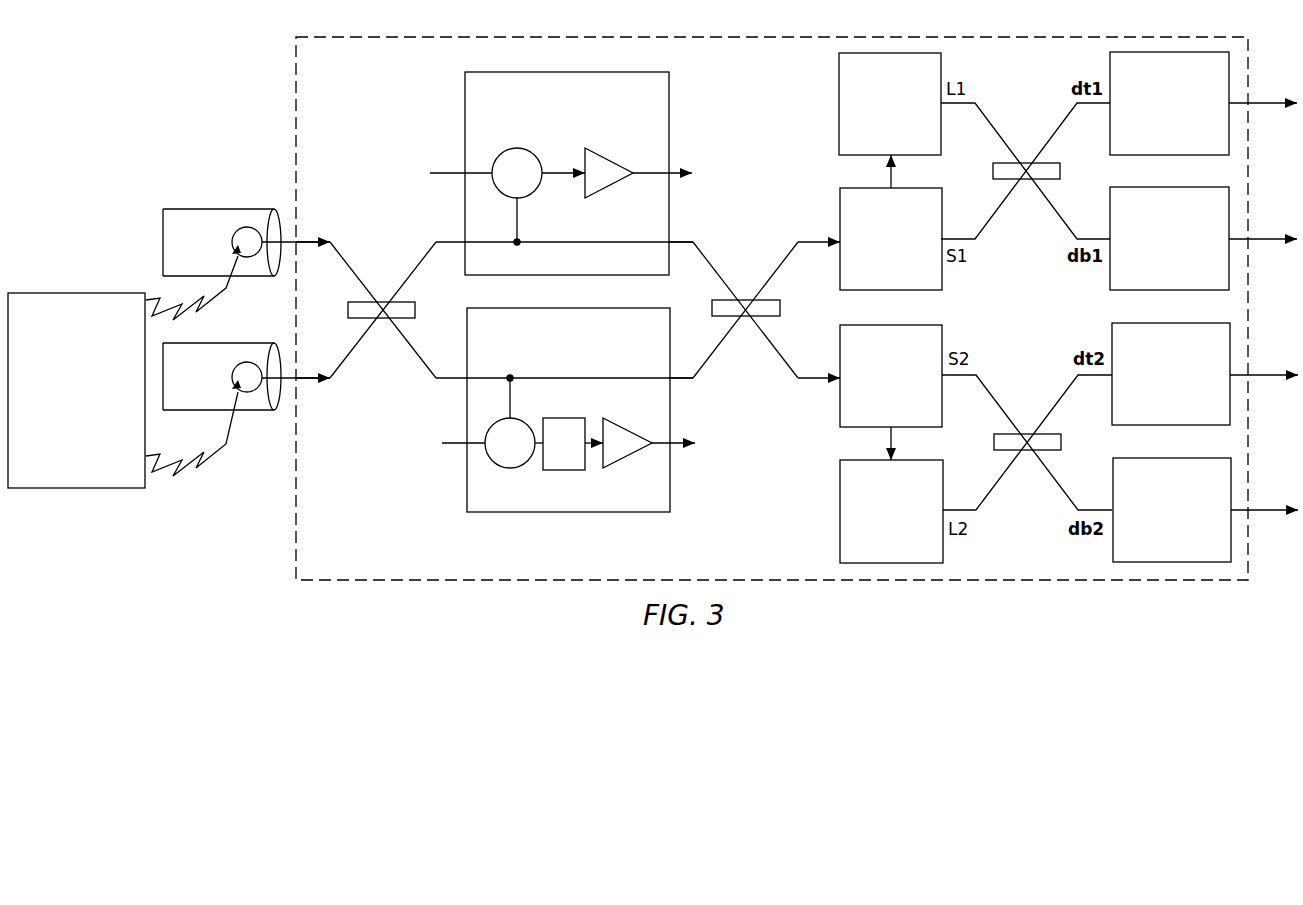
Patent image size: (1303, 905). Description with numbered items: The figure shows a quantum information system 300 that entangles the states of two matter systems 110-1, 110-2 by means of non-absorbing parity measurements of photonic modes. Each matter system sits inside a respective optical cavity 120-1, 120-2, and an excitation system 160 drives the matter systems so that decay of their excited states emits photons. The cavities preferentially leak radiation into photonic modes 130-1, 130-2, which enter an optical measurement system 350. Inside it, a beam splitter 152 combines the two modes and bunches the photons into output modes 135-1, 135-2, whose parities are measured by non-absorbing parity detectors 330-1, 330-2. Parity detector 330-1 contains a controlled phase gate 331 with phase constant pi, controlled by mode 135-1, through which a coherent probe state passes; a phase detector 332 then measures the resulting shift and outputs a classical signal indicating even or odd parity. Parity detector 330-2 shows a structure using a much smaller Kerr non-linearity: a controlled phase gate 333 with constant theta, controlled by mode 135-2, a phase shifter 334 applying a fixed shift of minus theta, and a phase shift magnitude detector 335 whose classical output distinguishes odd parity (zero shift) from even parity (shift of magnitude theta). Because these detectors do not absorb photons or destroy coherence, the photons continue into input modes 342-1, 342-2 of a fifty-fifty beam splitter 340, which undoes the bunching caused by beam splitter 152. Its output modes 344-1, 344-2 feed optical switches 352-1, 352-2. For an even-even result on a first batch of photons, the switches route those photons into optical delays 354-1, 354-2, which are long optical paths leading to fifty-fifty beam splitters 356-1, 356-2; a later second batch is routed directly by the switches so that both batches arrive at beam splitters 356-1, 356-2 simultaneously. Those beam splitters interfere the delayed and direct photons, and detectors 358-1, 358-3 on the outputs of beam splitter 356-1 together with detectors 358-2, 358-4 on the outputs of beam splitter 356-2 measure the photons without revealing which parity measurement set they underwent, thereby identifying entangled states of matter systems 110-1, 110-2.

The quantum information system 300 is at (210, 52).
The matter system 110-1 is at (246, 227).
The matter system 110-2 is at (247, 362).
The optical cavity 120-1 is at (218, 247).
The optical cavity 120-2 is at (218, 380).
The excitation system 160 is at (62, 431).
The photonic mode 130-1 is at (318, 238).
The photonic mode 130-2 is at (318, 382).
The beam splitter 152 is at (378, 302).
The photonic output mode 135-1 is at (437, 240).
The photonic output mode 135-2 is at (437, 380).
The non-absorbing parity detector 330-1 is at (564, 173).
The non-absorbing parity detector 330-2 is at (563, 410).
The controlled phase gate 331 is at (506, 153).
The phase detector 332 is at (611, 192).
The controlled phase gate 333 is at (508, 468).
The phase shifter 334 is at (570, 470).
The phase shift magnitude detector 335 is at (624, 426).
The 50-50 beam splitter 340 is at (745, 299).
The input mode 342-1 is at (692, 240).
The input mode 342-2 is at (693, 380).
The output mode 344-1 is at (800, 240).
The output mode 344-2 is at (800, 383).
The optical measurement system 350 is at (556, 569).
The optical switch 352-1 is at (869, 282).
The optical switch 352-2 is at (869, 419).
The optical delay 354-1 is at (868, 131).
The optical delay 354-2 is at (869, 539).
The 50-50 beam splitter 356-1 is at (1026, 162).
The 50-50 beam splitter 356-2 is at (1028, 433).
The detector 358-1 is at (1147, 131).
The detector 358-2 is at (1149, 401).
The detector 358-3 is at (1147, 269).
The detector 358-4 is at (1150, 539).